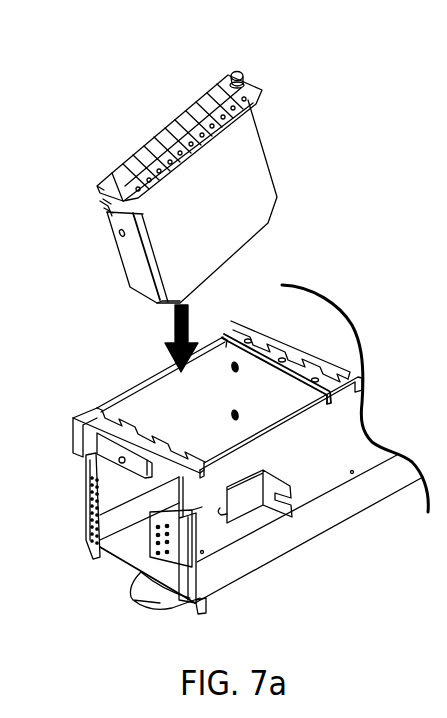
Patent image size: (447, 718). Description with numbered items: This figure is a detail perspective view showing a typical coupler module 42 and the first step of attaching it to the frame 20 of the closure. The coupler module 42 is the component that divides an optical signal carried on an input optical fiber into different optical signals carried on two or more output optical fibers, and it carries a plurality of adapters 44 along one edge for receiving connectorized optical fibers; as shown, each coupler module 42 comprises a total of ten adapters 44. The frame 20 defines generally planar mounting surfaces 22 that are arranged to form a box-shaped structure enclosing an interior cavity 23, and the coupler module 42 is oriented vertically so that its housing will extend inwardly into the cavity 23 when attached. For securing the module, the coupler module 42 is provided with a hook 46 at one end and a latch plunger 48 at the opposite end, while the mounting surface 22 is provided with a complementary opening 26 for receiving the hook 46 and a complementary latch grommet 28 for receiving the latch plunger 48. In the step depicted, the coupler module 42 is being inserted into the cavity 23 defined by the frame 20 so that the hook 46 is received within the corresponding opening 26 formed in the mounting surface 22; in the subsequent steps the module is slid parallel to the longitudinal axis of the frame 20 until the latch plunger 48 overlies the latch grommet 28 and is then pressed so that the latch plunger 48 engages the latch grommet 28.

The frame 20 is at (248, 438).
The mounting surface 22 is at (305, 360).
The interior cavity 23 is at (132, 537).
The opening 26 is at (122, 416).
The latch grommet 28 is at (248, 338).
The coupler module 42 is at (248, 155).
The adapter 44 is at (187, 116).
The hook 46 is at (100, 208).
The latch plunger 48 is at (241, 70).